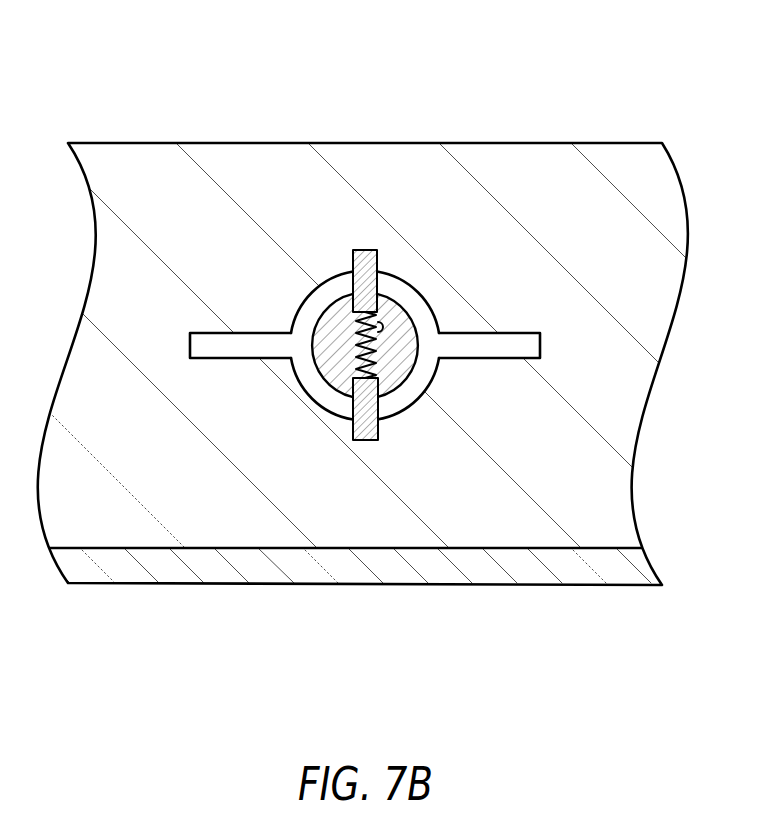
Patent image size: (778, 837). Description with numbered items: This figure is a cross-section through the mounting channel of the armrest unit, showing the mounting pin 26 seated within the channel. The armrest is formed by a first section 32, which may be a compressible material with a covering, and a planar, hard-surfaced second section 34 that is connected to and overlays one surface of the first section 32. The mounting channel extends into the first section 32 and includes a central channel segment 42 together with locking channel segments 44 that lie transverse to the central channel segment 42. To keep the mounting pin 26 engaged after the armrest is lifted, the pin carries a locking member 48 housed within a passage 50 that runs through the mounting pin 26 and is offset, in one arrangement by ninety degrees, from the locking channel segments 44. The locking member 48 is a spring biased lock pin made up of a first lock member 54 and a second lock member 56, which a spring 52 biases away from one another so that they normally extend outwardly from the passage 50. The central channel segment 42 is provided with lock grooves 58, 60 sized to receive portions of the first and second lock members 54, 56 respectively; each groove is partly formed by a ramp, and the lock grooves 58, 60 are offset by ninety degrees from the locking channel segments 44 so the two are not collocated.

The mounting pin 26 is at (313, 322).
The first section 32 is at (202, 162).
The second section 34 is at (155, 583).
The central channel segment 42 is at (305, 392).
The locking channel segments 44 is at (467, 347).
The locking member 48 is at (368, 357).
The passage 50 is at (381, 326).
The spring 52 is at (355, 362).
The first lock member 54 is at (363, 253).
The second lock member 56 is at (365, 430).
The lock groove 58 is at (380, 433).
The lock groove 60 is at (355, 267).